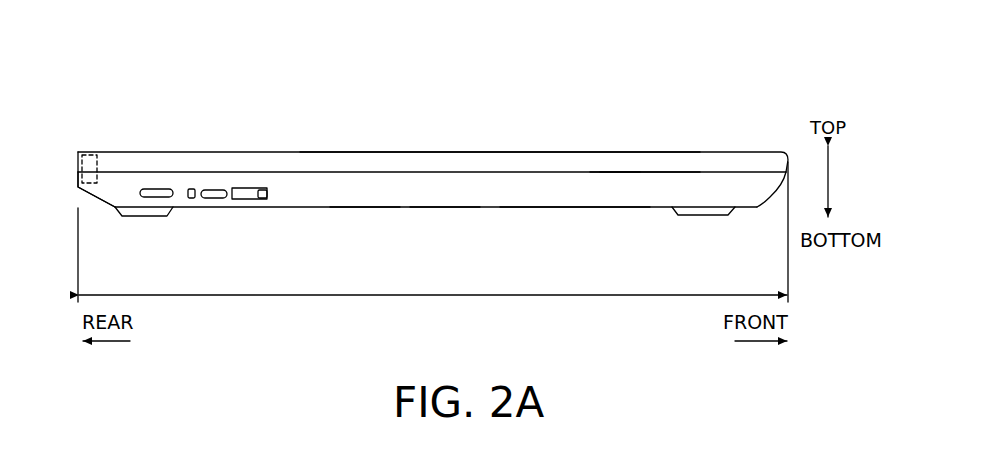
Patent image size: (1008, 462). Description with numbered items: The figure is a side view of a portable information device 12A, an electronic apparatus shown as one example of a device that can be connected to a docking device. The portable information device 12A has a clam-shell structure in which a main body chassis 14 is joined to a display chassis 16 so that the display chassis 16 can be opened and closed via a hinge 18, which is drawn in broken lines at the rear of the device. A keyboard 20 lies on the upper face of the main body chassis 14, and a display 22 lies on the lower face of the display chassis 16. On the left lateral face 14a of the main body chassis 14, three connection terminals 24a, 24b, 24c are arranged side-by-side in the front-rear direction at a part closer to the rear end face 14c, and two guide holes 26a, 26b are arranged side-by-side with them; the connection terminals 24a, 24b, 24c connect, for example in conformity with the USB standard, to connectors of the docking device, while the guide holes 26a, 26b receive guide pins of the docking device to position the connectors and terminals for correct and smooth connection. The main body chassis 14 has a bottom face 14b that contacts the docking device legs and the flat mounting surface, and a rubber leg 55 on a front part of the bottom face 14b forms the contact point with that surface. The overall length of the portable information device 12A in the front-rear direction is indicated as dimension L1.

The portable information device 12A is at (92, 74).
The main body chassis 14 is at (575, 210).
The lateral face 14a is at (368, 195).
The bottom face 14b is at (443, 208).
The rear end face 14c is at (77, 180).
The display chassis 16 is at (566, 149).
The hinge 18 is at (95, 152).
The keyboard 20 is at (643, 172).
The display 22 is at (610, 174).
The connection terminal 24a is at (258, 188).
The connection terminal 24b is at (217, 190).
The connection terminal 24c is at (158, 189).
The guide hole 26a is at (259, 200).
The guide hole 26b is at (190, 200).
The rubber leg 55 is at (703, 215).
The dimension in the front-rear direction L1 is at (433, 243).